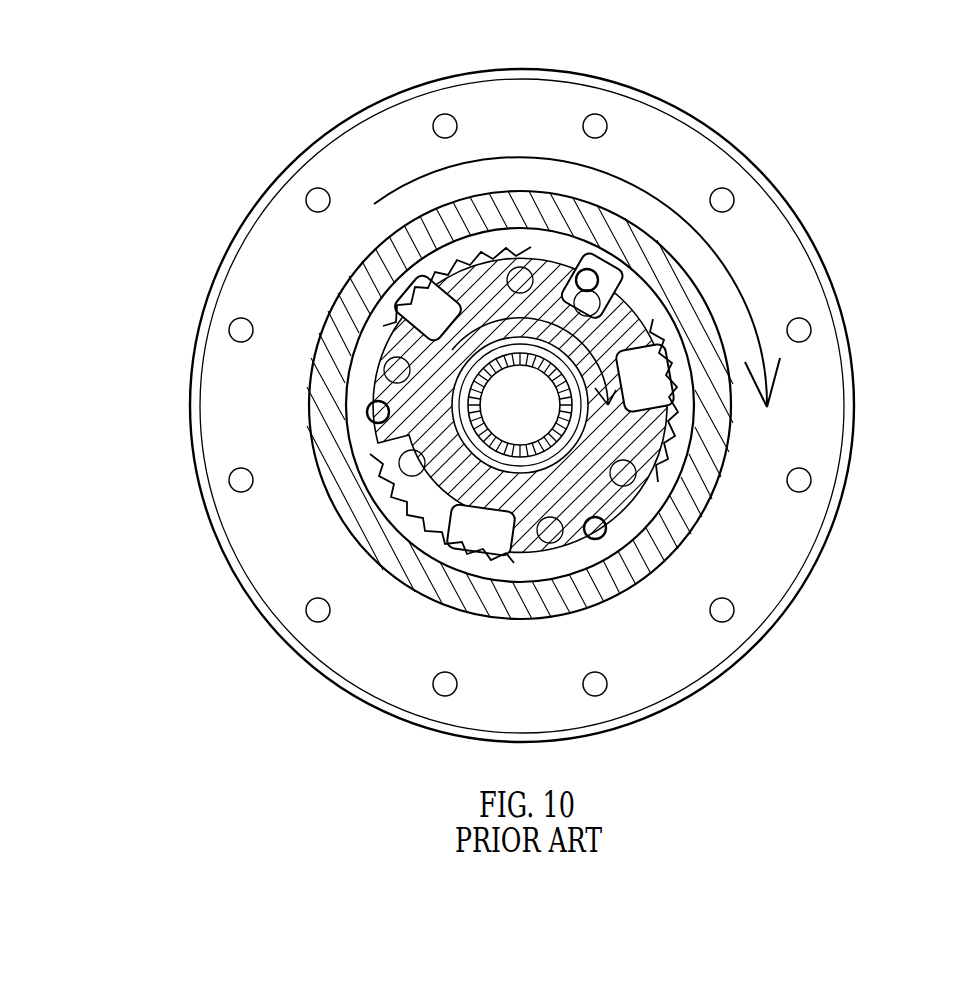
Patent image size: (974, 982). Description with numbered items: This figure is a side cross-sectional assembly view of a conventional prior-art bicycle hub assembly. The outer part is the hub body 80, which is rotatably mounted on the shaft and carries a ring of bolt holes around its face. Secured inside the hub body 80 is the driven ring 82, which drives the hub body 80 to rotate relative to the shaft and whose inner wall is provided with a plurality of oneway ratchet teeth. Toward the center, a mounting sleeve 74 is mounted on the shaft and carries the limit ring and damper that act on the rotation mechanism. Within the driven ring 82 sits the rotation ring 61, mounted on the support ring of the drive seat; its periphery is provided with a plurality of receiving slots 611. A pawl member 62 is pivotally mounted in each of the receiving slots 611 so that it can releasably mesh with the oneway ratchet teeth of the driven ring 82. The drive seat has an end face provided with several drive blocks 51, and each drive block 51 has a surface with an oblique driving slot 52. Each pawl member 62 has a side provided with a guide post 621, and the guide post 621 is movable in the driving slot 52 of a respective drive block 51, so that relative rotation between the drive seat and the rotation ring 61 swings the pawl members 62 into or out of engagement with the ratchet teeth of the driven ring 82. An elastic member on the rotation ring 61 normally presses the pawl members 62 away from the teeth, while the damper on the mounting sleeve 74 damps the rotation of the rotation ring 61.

The hub body 80 is at (745, 160).
The mounting sleeve 74 is at (470, 382).
The driven ring 82 is at (667, 467).
The receiving slots 611 is at (640, 497).
The drive blocks 51 is at (680, 462).
The pawl members 62 is at (362, 415).
The rotation ring 61 is at (420, 497).
The driving slot 52 is at (660, 510).
The guide post 621 is at (597, 530).